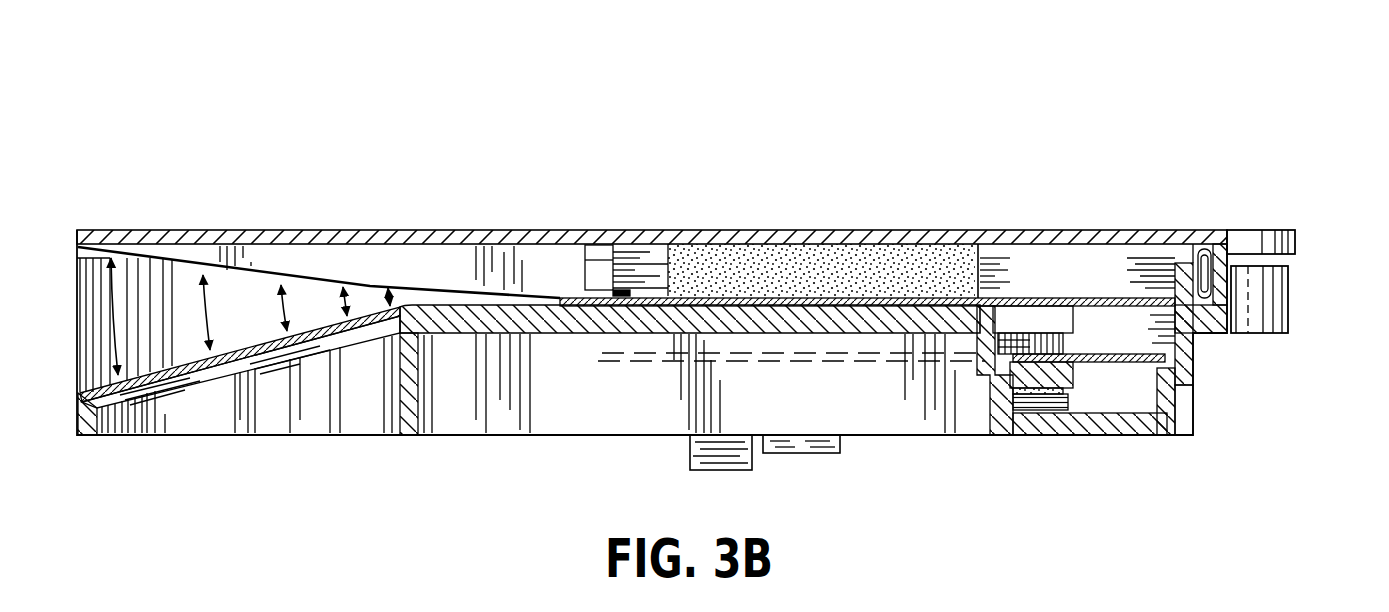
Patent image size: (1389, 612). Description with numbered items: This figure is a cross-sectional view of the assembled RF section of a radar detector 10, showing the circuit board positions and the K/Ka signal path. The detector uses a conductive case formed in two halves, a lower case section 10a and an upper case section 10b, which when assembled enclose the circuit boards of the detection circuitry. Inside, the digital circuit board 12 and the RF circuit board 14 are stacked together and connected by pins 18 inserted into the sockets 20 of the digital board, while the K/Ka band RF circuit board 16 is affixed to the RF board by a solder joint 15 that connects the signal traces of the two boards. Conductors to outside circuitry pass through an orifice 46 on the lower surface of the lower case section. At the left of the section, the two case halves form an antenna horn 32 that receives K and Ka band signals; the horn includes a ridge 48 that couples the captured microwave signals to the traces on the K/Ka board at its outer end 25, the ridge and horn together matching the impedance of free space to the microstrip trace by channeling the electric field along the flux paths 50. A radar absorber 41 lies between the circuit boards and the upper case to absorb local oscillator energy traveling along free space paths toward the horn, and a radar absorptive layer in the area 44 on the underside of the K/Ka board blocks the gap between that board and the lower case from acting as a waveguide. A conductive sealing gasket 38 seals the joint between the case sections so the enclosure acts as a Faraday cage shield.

The radar detector 10 is at (158, 116).
The lower case section 10a is at (1158, 440).
The upper case section 10b is at (1293, 223).
The digital circuit board 12 is at (1139, 370).
The RF circuit board 14 is at (1084, 292).
The solder joint 15 is at (972, 296).
The K/Ka band RF circuit board 16 is at (727, 292).
The pins 18 is at (1063, 343).
The sockets 20 is at (1075, 378).
The outer end of the K/Ka board 25 is at (555, 298).
The antenna horn 32 is at (90, 313).
The conductive sealing gasket 38 is at (1206, 248).
The radar absorber 41 is at (834, 262).
The radar absorptive layer area 44 is at (893, 310).
The orifice 46 is at (752, 466).
The ridge 48 is at (385, 266).
The flux paths 50 is at (197, 298).